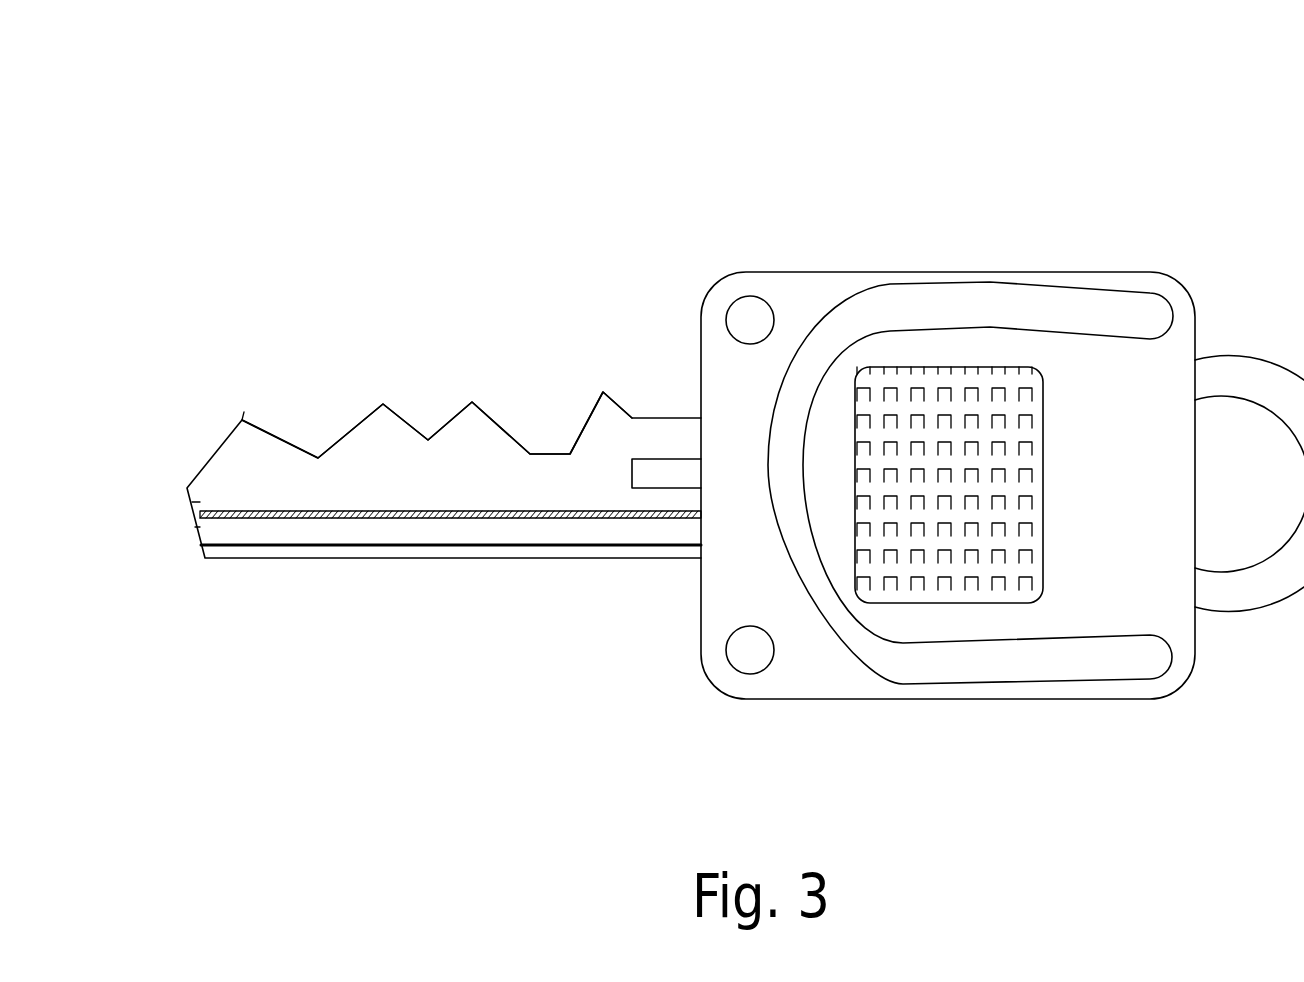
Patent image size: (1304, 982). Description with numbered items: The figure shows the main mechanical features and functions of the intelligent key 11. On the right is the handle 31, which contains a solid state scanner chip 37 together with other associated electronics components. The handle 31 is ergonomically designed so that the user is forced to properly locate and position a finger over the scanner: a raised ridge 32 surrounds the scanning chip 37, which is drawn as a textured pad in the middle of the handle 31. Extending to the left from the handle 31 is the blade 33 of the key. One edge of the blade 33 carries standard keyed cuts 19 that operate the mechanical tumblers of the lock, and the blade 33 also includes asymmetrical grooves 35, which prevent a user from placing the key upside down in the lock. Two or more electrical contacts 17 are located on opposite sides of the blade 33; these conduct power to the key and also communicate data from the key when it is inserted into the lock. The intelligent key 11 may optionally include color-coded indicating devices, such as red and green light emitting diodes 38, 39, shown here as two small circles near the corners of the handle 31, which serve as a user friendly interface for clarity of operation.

The intelligent key 11 is at (877, 218).
The electrical contacts 17 is at (665, 465).
The keyed cuts 19 is at (450, 415).
The handle 31 is at (1168, 585).
The raised ridge 32 is at (997, 298).
The blade 33 is at (249, 480).
The asymmetrical grooves 35 is at (490, 545).
The solid state scanner chip 37 is at (928, 517).
The red light emitting diode 38 is at (750, 320).
The green light emitting diode 39 is at (750, 650).